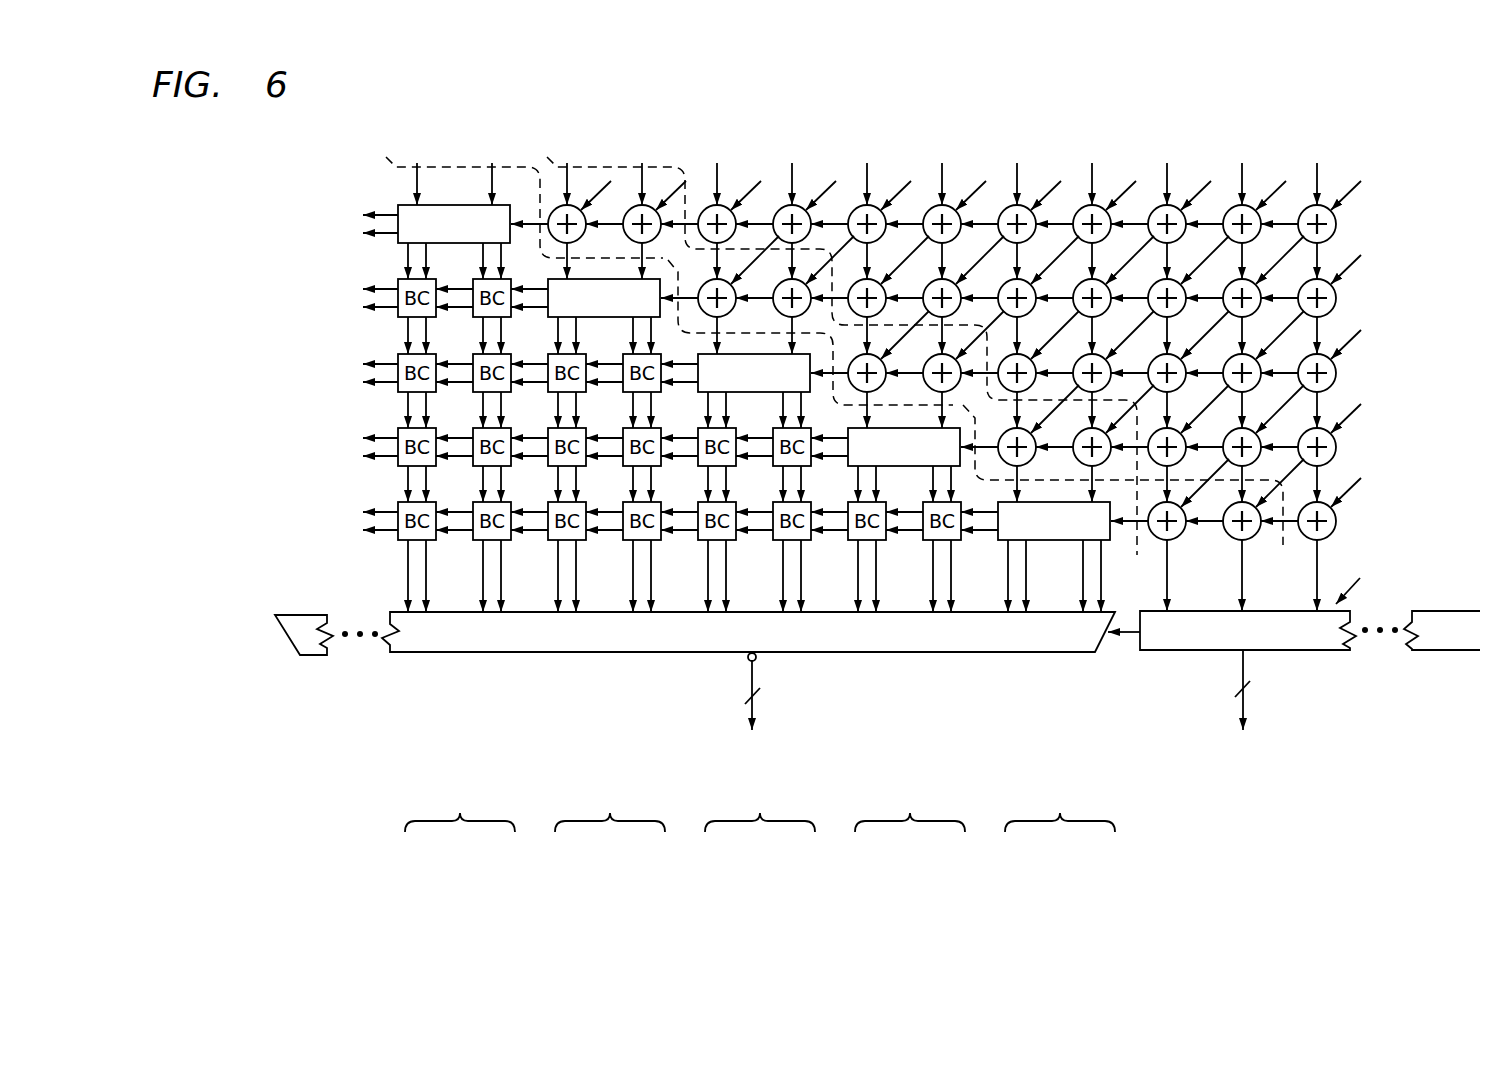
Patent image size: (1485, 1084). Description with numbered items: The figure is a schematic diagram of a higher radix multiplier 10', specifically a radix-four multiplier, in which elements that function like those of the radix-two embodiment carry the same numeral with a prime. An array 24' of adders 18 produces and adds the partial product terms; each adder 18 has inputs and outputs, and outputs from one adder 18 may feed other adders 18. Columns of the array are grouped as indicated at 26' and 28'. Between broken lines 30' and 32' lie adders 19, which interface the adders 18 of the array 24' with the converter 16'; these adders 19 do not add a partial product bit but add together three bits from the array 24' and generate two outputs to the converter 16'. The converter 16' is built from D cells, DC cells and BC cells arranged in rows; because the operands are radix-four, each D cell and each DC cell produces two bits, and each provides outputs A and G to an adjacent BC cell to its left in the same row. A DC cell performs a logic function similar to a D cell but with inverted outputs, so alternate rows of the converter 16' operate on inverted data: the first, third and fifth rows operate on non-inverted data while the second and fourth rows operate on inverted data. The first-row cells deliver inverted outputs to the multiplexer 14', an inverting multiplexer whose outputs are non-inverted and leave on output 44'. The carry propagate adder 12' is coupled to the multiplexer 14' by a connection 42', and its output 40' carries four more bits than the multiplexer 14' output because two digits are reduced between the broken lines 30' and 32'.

The multiplier 10' is at (870, 466).
The carry propagate adder 12' is at (1310, 663).
The multiplexer 14' is at (748, 660).
The converter 16' is at (685, 387).
The adder 18 is at (1336, 300).
The adder 19 is at (578, 239).
The array 24' is at (971, 341).
The adder column group 26' is at (1204, 188).
The adder column group 28' is at (829, 188).
The broken line 30' is at (524, 184).
The broken line 32' is at (842, 342).
The output 40' is at (1242, 690).
The adder to multiplexer connection 42' is at (1126, 670).
The multiplexer output 44' is at (745, 691).